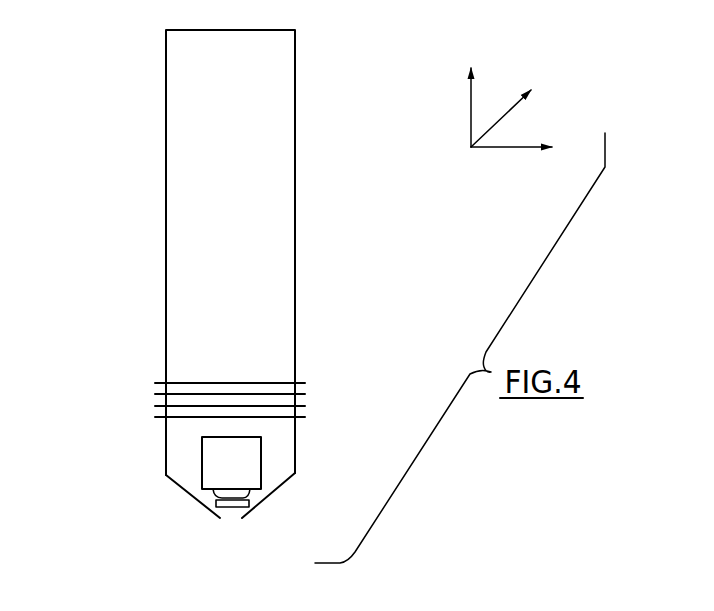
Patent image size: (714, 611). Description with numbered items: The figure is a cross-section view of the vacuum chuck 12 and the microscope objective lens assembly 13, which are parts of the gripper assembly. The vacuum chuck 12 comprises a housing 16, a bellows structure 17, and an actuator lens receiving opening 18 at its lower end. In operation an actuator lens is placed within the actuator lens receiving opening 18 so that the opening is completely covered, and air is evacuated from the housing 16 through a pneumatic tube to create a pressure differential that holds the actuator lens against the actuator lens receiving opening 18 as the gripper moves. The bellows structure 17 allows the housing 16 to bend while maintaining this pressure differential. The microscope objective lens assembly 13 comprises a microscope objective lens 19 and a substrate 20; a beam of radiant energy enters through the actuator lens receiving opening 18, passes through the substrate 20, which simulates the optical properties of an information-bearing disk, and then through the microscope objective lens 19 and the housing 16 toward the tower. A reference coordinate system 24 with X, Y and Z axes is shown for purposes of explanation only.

The vacuum chuck 12 is at (137, 90).
The microscope objective lens assembly 13 is at (276, 449).
The housing 16 is at (295, 258).
The bellows structure 17 is at (165, 404).
The actuator lens receiving opening 18 is at (231, 517).
The microscope objective lens 19 is at (218, 510).
The substrate 20 is at (217, 510).
The reference coordinate system 24 is at (509, 148).